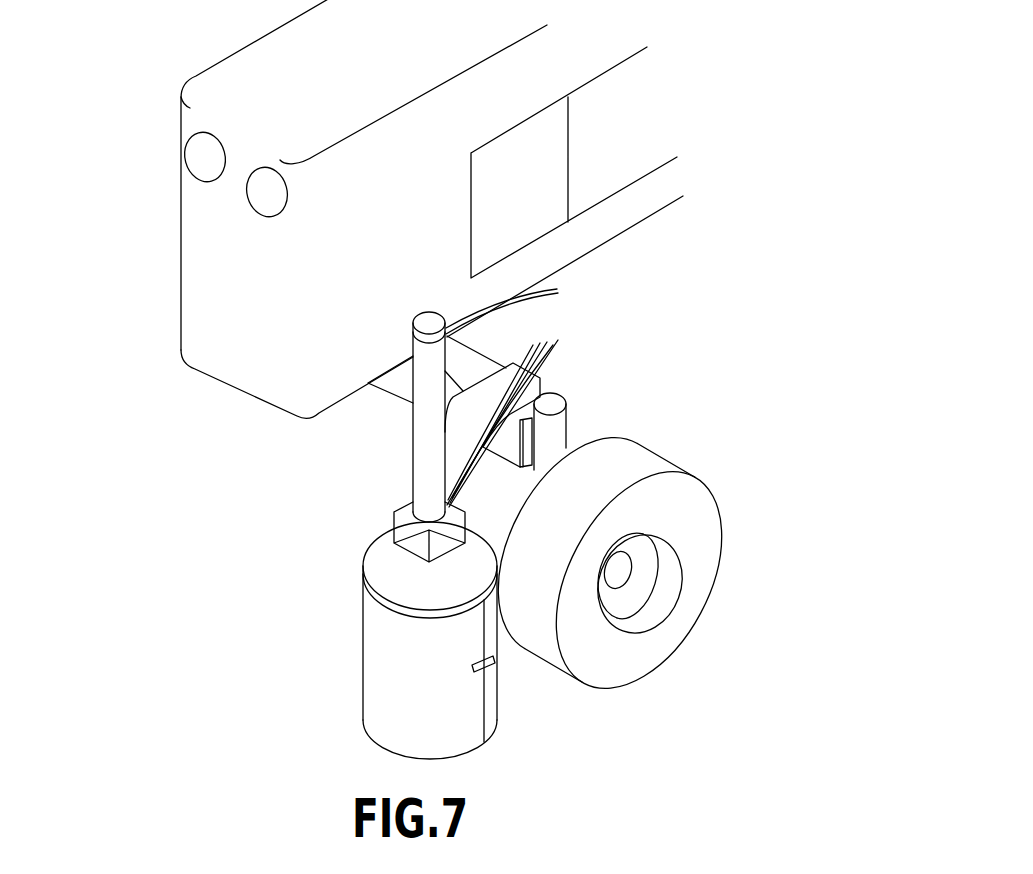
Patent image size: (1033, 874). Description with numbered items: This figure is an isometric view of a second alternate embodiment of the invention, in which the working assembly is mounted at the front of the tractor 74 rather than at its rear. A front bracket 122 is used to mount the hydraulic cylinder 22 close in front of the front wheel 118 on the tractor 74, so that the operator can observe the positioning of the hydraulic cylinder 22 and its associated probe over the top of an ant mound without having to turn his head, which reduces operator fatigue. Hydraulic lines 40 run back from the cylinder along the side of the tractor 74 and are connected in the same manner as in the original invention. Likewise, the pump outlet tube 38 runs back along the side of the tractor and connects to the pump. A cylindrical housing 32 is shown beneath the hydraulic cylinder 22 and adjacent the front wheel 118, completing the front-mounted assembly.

The tractor 74 is at (247, 328).
The hydraulic cylinder 22 is at (423, 443).
The pump outlet tube 38 is at (550, 352).
The hydraulic lines 40 is at (548, 345).
The front bracket 122 is at (540, 390).
The motor housing 32 is at (377, 615).
The front wheel 118 is at (700, 508).